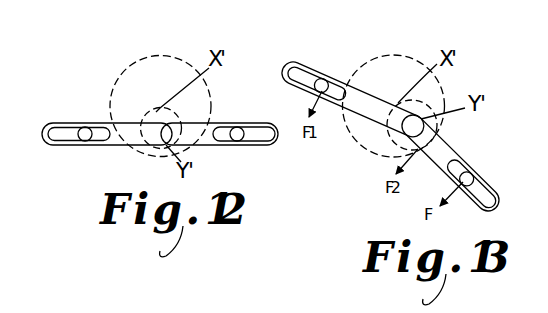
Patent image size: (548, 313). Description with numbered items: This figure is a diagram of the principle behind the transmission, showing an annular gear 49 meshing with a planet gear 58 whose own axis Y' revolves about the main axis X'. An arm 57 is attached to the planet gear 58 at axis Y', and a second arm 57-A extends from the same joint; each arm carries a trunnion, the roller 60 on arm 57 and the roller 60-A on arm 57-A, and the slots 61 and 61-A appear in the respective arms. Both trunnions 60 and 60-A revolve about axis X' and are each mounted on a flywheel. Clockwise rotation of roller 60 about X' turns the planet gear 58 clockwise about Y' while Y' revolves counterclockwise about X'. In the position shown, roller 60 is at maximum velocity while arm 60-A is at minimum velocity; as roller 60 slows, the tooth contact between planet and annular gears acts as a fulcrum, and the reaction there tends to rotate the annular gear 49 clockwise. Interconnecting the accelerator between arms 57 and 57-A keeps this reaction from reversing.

In FIG. 12, the annular gear 49 is at (171, 57).
In FIG. 13, the annular gear 49 is at (357, 141).
In FIG. 12, the planet gear 58 is at (145, 115).
In FIG. 13, the planet gear 58 is at (391, 140).
In FIG. 12, the arm 57 is at (201, 131).
In FIG. 13, the arm 57 is at (494, 188).
In FIG. 12, the arm 57-A is at (122, 138).
In FIG. 13, the arm 57-A is at (308, 68).
In FIG. 12, the trunnion 60 is at (238, 128).
In FIG. 13, the trunnion 60 is at (470, 177).
In FIG. 12, the trunnion 60-A is at (84, 127).
In FIG. 13, the trunnion 60-A is at (328, 78).
In FIG. 12, the slot 61 is at (269, 139).
In FIG. 13, the slot 61 is at (481, 210).
In FIG. 12, the slot 61-A is at (58, 141).
In FIG. 13, the slot 61-A is at (306, 82).